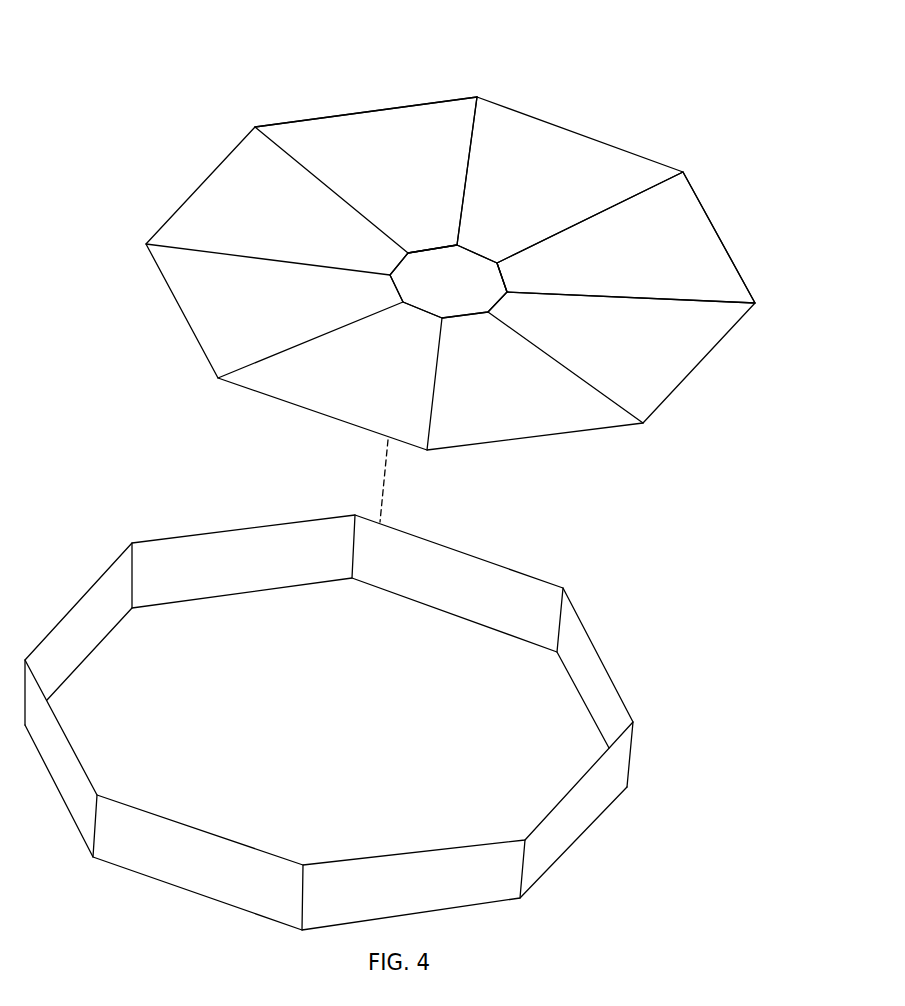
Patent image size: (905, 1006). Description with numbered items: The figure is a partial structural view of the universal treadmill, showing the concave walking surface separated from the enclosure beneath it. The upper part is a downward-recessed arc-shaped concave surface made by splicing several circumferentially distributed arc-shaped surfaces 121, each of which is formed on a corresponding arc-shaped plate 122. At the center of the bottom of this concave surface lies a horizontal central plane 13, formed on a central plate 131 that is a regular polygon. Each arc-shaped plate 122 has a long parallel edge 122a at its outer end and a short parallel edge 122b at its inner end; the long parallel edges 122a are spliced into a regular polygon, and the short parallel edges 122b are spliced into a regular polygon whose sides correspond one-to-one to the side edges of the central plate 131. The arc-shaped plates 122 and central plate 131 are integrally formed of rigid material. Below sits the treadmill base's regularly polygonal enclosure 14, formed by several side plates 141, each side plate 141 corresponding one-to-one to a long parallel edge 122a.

The arc-shaped surface 121 is at (542, 183).
The arc-shaped plate 122 is at (662, 243).
The long parallel edge 122a is at (333, 113).
The short parallel edge 122b is at (430, 247).
The central plane 13 is at (470, 295).
The central plate 131 is at (438, 292).
The regularly polygonal enclosure 14 is at (603, 620).
The side plate 141 is at (575, 812).